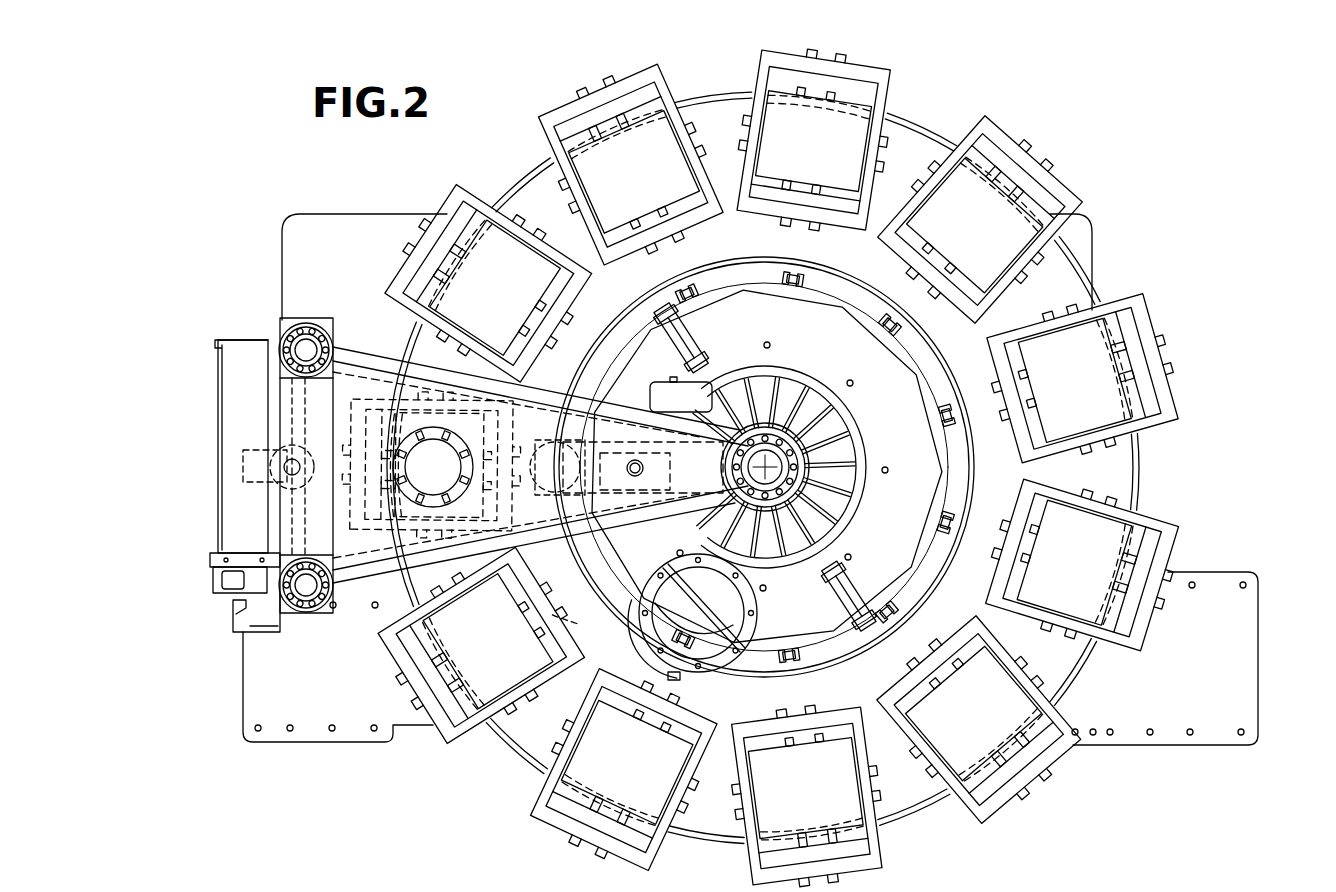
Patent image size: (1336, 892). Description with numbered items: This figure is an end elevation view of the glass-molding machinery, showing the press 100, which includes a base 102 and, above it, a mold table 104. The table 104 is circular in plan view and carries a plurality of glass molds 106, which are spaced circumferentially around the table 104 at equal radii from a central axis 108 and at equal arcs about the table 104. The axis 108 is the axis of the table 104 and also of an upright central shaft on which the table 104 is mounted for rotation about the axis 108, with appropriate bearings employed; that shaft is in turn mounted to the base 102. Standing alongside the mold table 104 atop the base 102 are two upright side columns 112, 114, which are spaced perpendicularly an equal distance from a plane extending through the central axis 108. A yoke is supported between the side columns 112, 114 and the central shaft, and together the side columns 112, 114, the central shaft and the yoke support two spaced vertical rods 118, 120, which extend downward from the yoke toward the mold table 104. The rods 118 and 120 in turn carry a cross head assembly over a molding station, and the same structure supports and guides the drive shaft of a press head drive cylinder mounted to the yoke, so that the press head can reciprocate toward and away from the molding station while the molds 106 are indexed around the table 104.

The press 100 is at (1232, 458).
The base 102 is at (1240, 660).
The mold table 104 is at (1138, 490).
The glass molds 106 is at (393, 400).
The central axis 108 is at (772, 463).
The side column 112 is at (312, 615).
The side column 114 is at (312, 322).
The vertical rod 118 is at (288, 455).
The vertical rod 120 is at (668, 617).